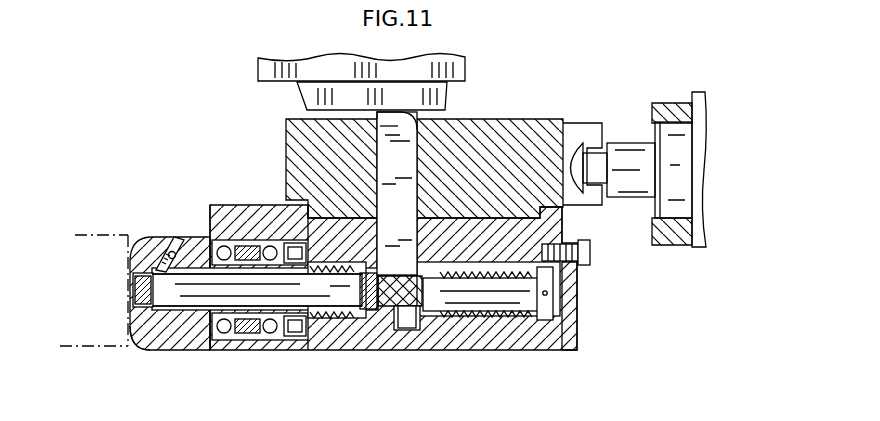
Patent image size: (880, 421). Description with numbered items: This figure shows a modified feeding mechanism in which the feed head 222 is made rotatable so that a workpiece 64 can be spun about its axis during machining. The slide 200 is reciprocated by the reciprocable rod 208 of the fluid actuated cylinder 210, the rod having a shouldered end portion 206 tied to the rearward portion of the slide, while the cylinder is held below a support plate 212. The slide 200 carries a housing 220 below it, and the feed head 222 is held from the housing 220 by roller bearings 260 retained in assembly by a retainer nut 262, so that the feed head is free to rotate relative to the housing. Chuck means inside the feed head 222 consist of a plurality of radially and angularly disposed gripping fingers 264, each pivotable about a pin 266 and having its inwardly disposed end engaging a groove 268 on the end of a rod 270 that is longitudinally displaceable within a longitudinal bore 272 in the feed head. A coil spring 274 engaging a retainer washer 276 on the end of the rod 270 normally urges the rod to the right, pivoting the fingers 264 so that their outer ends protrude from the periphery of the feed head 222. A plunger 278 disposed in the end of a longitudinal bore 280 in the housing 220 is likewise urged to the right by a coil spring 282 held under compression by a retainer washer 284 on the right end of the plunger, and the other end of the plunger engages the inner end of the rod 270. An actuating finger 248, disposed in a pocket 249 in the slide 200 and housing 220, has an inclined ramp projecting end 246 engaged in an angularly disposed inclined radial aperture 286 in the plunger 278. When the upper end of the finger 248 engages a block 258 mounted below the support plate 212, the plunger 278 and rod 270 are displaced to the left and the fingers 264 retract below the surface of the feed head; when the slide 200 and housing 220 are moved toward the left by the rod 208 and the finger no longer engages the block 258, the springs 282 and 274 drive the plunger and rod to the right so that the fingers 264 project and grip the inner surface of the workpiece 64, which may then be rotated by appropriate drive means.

The workpiece 64 is at (78, 235).
The slide 200 is at (496, 122).
The shouldered end portion 206 is at (578, 146).
The reciprocable rod 208 is at (640, 178).
The fluid actuated cylinder 210 is at (683, 157).
The support plate 212 is at (276, 56).
The housing 220 is at (340, 350).
The feed head 222 is at (150, 238).
The inclined ramp projecting end 246 is at (400, 285).
The actuating finger 248 is at (418, 182).
The pocket 249 is at (405, 133).
The block 258 is at (304, 104).
The roller bearings 260 is at (230, 242).
The retainer nut 262 is at (305, 347).
The gripping fingers 264 is at (178, 255).
The pin 266 is at (172, 251).
The groove 268 is at (152, 290).
The rod 270 is at (190, 306).
The longitudinal bore 272 is at (196, 284).
The coil spring 274 is at (265, 290).
The retainer washer 276 is at (326, 270).
The plunger 278 is at (440, 272).
The longitudinal bore 280 is at (460, 312).
The coil spring 282 is at (528, 350).
The retainer washer 284 is at (553, 297).
The inclined radial aperture 286 is at (382, 350).